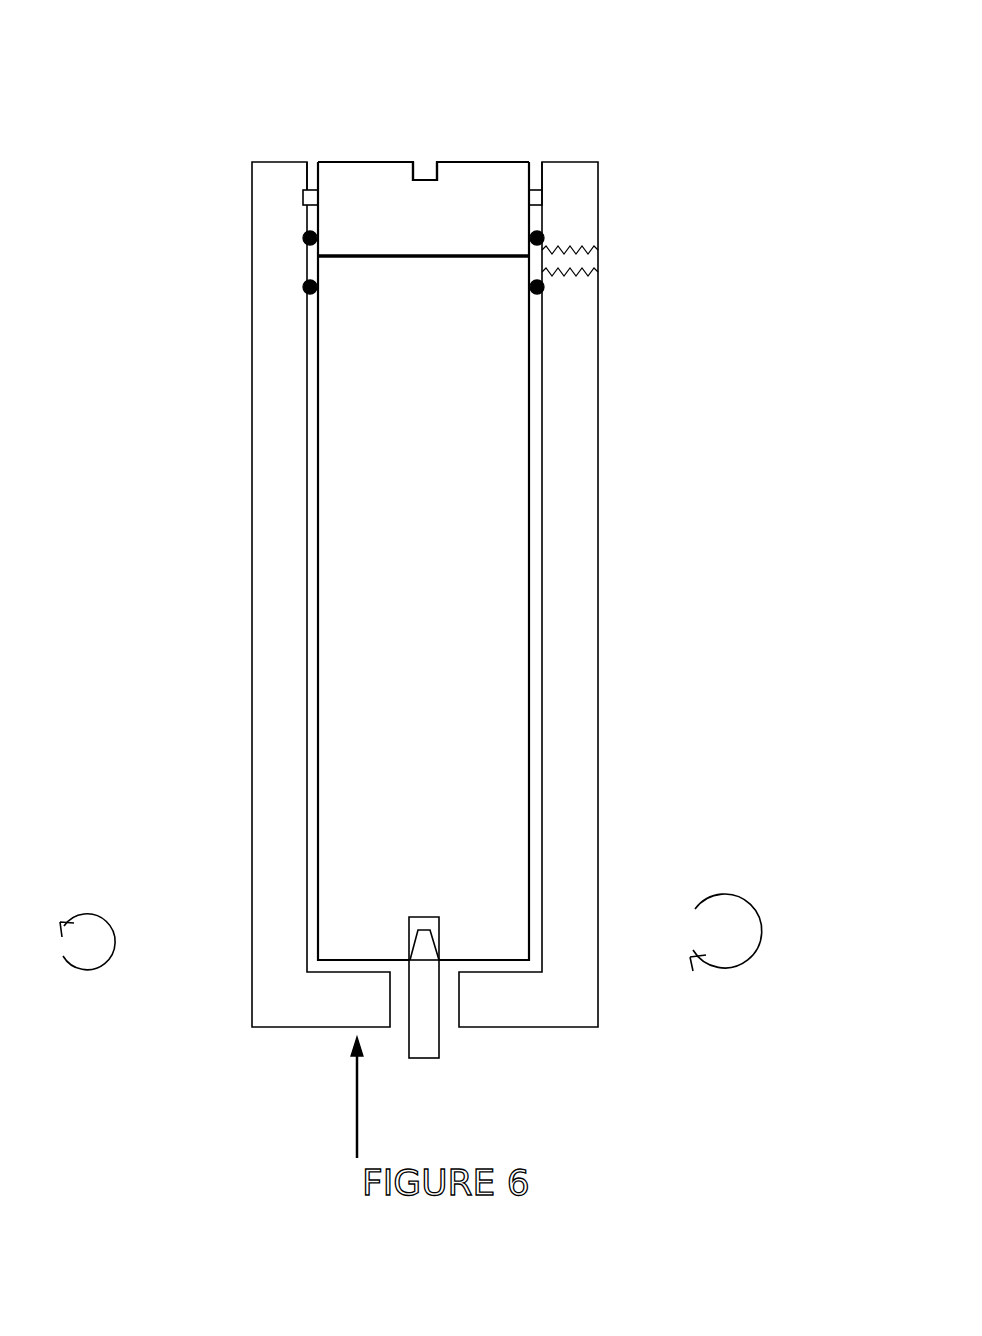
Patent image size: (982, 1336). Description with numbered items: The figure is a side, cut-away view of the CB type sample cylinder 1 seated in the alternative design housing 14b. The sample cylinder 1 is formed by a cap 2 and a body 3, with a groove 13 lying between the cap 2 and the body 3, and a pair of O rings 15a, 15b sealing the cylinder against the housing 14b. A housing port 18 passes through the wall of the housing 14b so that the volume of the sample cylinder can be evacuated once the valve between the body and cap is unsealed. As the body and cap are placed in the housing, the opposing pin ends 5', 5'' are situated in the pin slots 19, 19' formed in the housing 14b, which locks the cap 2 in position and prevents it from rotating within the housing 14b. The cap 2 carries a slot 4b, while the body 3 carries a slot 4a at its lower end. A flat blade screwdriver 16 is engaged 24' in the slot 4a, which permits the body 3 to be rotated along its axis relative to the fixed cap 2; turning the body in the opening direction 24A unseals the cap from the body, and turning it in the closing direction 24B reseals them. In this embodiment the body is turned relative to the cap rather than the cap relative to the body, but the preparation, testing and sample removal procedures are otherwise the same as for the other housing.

The CB type sample cylinder 1 is at (438, 579).
The cap 2 is at (333, 160).
The body 3 is at (537, 720).
The slot 4a is at (428, 910).
The slot 4b is at (423, 172).
The pin end 5' is at (247, 148).
The pin end 5'' is at (608, 142).
The groove between cap and body 13 is at (427, 250).
The housing 14b is at (612, 437).
The O ring 15a is at (297, 242).
The O ring 15b is at (297, 292).
The flat blade screwdriver 16 is at (447, 1067).
The housing port 18 is at (603, 262).
The pin slot 19 is at (244, 110).
The pin slot 19' is at (609, 103).
The screwdriver engagement 24' is at (271, 1097).
The opening rotation 24A is at (735, 963).
The closing rotation 24B is at (97, 970).